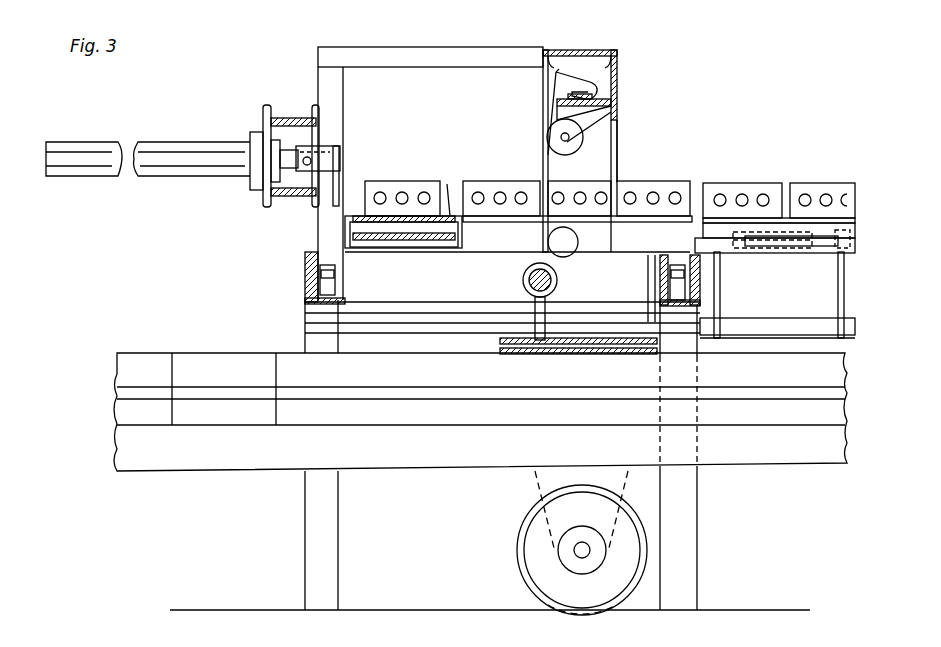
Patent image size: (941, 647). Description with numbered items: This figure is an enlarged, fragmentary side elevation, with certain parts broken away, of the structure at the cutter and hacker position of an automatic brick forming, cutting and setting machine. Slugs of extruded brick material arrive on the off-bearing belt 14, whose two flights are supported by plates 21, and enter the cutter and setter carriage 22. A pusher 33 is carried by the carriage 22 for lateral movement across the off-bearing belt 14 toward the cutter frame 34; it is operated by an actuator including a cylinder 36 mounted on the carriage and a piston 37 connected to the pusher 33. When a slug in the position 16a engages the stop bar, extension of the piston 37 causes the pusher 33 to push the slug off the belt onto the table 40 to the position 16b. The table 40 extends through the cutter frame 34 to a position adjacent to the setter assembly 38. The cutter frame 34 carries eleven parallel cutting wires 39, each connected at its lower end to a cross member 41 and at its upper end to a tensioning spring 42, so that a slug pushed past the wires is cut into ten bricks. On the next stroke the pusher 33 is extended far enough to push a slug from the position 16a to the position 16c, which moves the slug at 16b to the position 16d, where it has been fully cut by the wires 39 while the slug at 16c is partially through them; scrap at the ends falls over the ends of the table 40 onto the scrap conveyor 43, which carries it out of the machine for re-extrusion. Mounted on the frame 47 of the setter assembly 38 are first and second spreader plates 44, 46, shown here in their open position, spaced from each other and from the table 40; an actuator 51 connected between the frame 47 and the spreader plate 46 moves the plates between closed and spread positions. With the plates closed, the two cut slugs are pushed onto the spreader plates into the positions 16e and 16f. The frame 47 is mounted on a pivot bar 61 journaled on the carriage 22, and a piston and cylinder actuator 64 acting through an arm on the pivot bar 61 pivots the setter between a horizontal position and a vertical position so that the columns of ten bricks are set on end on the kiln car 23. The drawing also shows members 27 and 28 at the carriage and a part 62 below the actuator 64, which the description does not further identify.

The off-bearing belt 14 is at (447, 198).
The slug position 16a is at (395, 181).
The slug position 16b is at (510, 179).
The slug position 16c is at (585, 182).
The slug position 16d is at (663, 181).
The slug position 16e is at (718, 183).
The slug position 16f is at (806, 183).
The plates 21 is at (427, 232).
The cutter and setter carriage 22 is at (624, 163).
The kiln car 23 is at (468, 466).
The clamp 27 is at (336, 280).
The bracket 28 is at (303, 280).
The pusher 33 is at (343, 162).
The cutter frame 34 is at (622, 102).
The cylinder 36 is at (175, 150).
The piston 37 is at (289, 170).
The setter assembly 38 is at (772, 262).
The cutting wires 39 is at (547, 146).
The table 40 is at (510, 222).
The cross member 41 is at (576, 254).
The tensioning spring 42 is at (570, 72).
The scrap conveyor 43 is at (512, 344).
The first spreader plate 44 is at (738, 226).
The second spreader plate 46 is at (810, 234).
The frame 47 is at (720, 308).
The actuator 51 is at (795, 255).
The pivot bar 61 is at (794, 322).
The rod 62 is at (534, 305).
The piston and cylinder actuator 64 is at (522, 280).